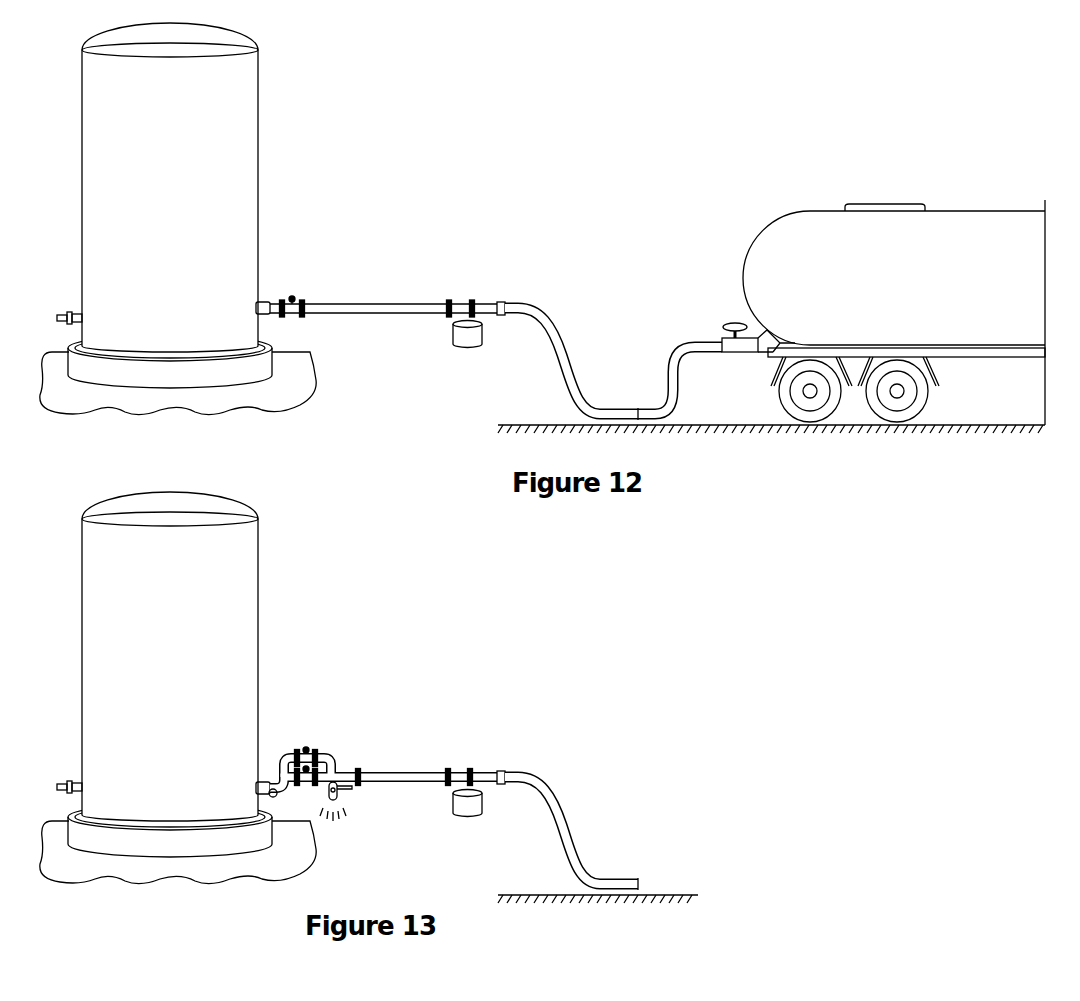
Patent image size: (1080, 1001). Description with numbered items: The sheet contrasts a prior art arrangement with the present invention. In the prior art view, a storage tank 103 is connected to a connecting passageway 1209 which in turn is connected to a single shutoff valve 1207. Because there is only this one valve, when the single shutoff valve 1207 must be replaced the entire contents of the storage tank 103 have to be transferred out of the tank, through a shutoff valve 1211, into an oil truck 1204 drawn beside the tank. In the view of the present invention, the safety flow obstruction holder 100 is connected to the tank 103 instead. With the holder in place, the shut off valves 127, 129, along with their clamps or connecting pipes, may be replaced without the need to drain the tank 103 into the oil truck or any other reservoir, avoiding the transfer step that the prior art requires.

In FIG. 12, the storage tank 103 is at (264, 186).
In FIG. 13, the storage tank 103 is at (264, 605).
In FIG. 13, the safety flow obstruction holder 100 is at (309, 702).
In FIG. 13, the shut off valve 127 is at (311, 742).
In FIG. 13, the shut off valve 129 is at (306, 800).
In FIG. 12, the tanker truck 1204 is at (820, 208).
In FIG. 12, the single shutoff valve 1207 is at (298, 284).
In FIG. 12, the connecting passageway 1209 is at (265, 300).
In FIG. 12, the shutoff valve 1211 is at (725, 310).